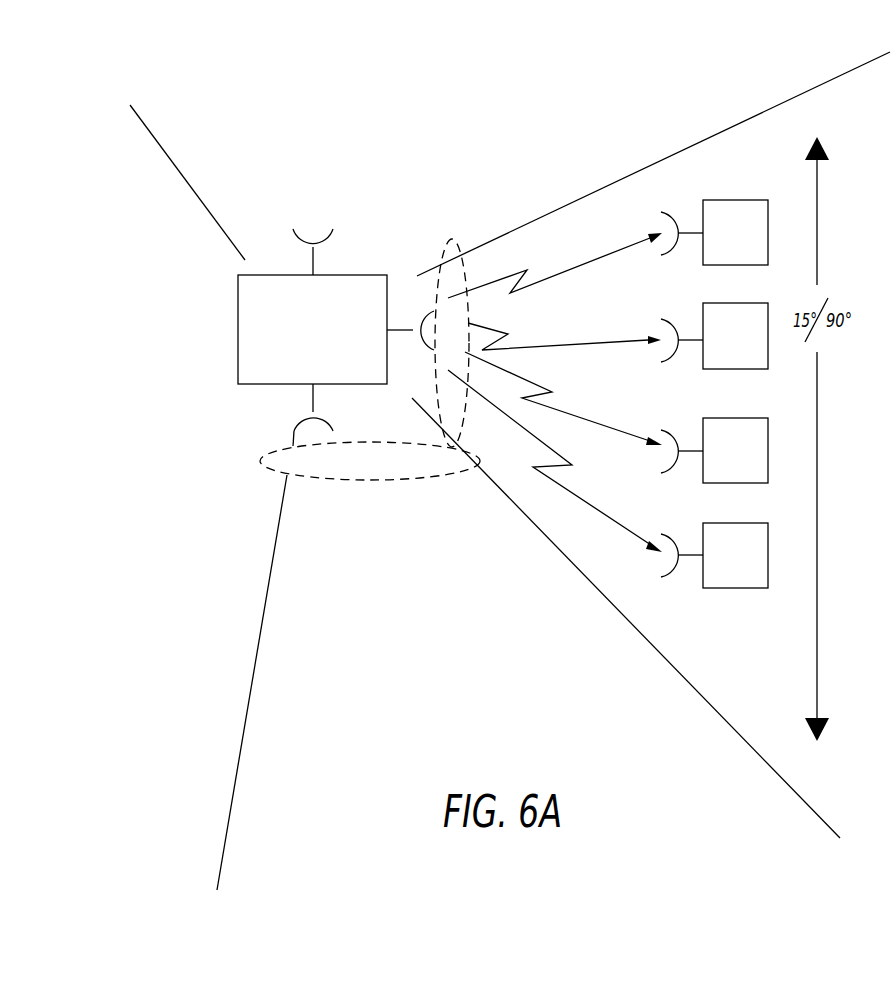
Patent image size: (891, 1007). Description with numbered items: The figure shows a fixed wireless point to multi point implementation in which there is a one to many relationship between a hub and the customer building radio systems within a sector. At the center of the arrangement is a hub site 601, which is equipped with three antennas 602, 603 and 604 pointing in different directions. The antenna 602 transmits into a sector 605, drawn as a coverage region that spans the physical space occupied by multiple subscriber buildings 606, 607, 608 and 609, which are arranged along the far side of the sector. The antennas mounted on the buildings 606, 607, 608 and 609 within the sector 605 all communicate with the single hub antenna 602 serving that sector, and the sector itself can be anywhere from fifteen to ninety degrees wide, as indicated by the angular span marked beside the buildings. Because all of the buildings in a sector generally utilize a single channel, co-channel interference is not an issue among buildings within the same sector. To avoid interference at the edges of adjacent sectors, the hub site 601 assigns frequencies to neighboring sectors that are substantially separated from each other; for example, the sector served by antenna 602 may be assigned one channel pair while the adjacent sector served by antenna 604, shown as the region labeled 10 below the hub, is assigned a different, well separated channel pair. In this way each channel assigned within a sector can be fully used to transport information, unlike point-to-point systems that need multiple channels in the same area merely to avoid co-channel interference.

The hub site 601 is at (226, 329).
The antenna 602 is at (428, 313).
The antenna 603 is at (297, 247).
The antenna 604 is at (300, 420).
The sector 605 is at (466, 233).
The subscriber building 606 is at (737, 200).
The subscriber building 607 is at (703, 304).
The subscriber building 608 is at (727, 418).
The subscriber building 609 is at (727, 523).
The coverage region 2A/2B 10 is at (250, 466).